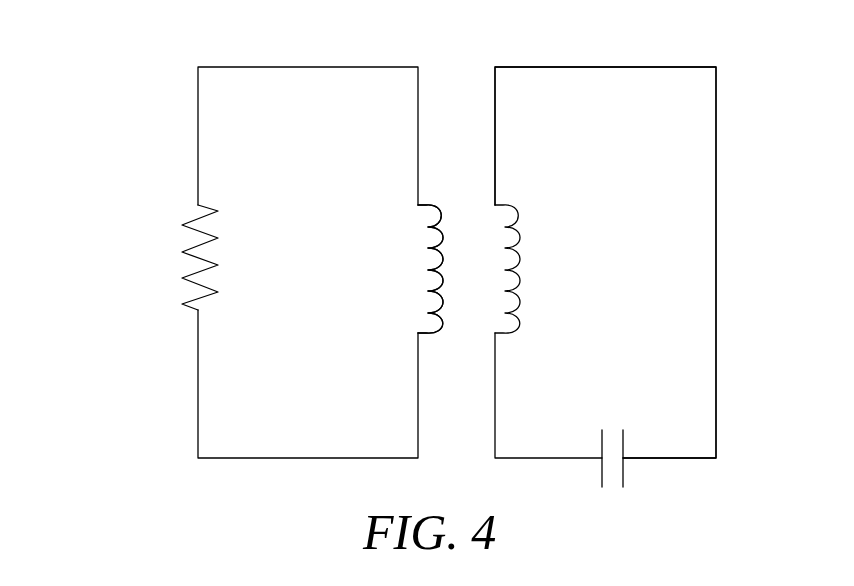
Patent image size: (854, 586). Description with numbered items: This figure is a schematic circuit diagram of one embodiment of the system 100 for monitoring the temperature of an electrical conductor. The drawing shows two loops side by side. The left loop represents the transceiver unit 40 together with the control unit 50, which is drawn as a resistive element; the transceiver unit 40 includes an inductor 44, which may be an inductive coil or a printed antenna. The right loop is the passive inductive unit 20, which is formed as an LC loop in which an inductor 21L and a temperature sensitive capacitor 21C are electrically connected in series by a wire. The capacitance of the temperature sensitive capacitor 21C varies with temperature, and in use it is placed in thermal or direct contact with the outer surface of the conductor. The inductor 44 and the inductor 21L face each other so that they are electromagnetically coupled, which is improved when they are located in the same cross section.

The system 100 is at (162, 53).
The control unit 50 is at (190, 243).
The transceiver unit 40 is at (440, 235).
The inductor 44 is at (430, 269).
The inductor 21L is at (517, 236).
The passive inductive unit 20 is at (623, 358).
The temperature sensitive capacitor 21C is at (624, 476).